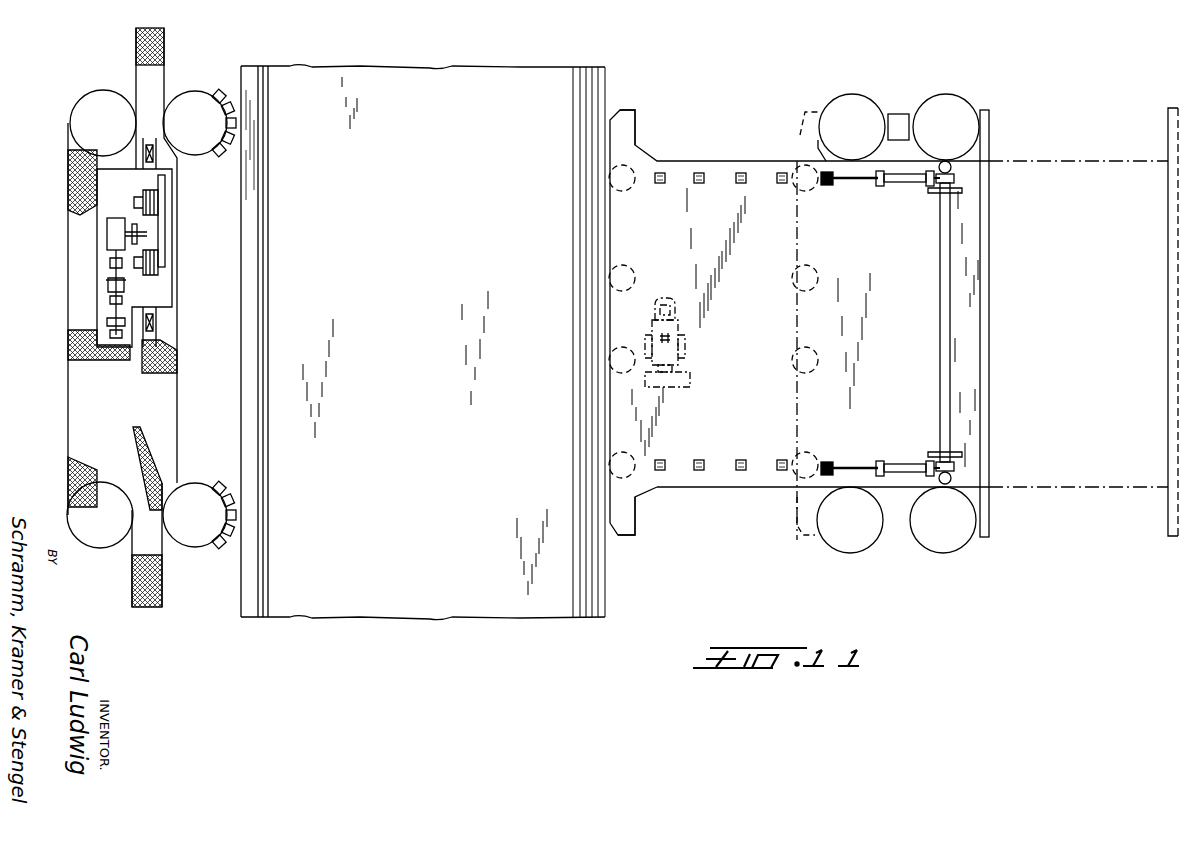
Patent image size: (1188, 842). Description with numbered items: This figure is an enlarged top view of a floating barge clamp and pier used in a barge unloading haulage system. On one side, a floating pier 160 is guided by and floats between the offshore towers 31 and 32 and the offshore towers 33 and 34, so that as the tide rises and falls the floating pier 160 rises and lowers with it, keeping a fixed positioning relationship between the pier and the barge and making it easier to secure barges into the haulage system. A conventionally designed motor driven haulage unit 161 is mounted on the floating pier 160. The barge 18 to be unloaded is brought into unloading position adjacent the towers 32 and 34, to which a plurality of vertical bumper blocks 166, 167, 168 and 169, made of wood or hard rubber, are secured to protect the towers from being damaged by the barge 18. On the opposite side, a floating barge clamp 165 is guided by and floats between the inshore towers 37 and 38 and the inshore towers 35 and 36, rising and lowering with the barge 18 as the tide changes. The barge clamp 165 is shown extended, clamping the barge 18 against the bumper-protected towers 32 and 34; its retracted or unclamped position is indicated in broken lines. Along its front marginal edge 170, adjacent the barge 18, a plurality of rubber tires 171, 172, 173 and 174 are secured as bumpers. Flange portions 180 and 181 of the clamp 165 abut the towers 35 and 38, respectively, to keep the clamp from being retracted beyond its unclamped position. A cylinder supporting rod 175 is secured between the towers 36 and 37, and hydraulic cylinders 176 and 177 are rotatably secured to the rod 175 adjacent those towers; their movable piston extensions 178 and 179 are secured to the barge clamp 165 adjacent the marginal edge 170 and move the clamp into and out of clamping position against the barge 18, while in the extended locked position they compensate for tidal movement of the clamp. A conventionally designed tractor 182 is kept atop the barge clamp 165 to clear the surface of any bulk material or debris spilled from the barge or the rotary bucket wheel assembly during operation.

The barge 18 is at (423, 342).
The offshore tower 31 is at (95, 100).
The offshore tower 32 is at (190, 94).
The offshore tower 33 is at (72, 520).
The offshore tower 34 is at (188, 540).
The inshore tower 35 is at (840, 546).
The inshore tower 36 is at (945, 546).
The inshore tower 37 is at (950, 102).
The inshore tower 38 is at (853, 100).
The floating pier 160 is at (68, 372).
The motor driven haulage unit 161 is at (95, 260).
The floating barge clamp 165 is at (712, 160).
The bumper block 166 is at (215, 550).
The bumper block 167 is at (218, 478).
The bumper block 168 is at (225, 160).
The bumper block 169 is at (226, 82).
The marginal edge 170 is at (605, 222).
The rubber tire 171 is at (611, 462).
The rubber tire 172 is at (611, 366).
The rubber tire 173 is at (611, 284).
The rubber tire 174 is at (612, 184).
The cylinder supporting rod 175 is at (939, 376).
The hydraulic cylinder 176 is at (905, 461).
The hydraulic cylinder 177 is at (900, 183).
The piston extension 178 is at (852, 462).
The piston extension 179 is at (848, 183).
The flange portion 180 is at (625, 514).
The flange portion 181 is at (628, 120).
The tractor 182 is at (680, 314).